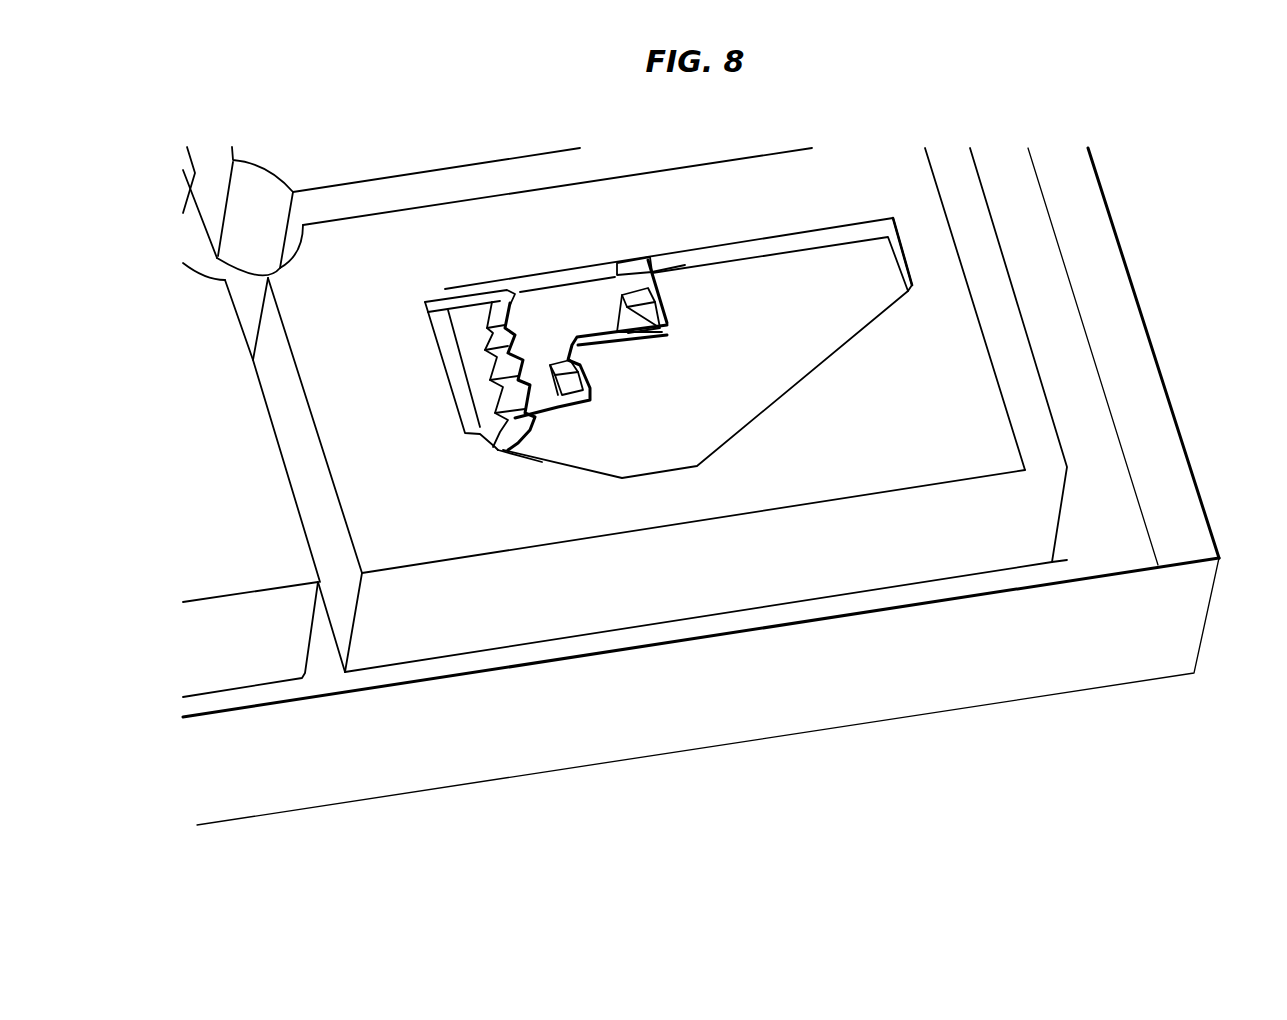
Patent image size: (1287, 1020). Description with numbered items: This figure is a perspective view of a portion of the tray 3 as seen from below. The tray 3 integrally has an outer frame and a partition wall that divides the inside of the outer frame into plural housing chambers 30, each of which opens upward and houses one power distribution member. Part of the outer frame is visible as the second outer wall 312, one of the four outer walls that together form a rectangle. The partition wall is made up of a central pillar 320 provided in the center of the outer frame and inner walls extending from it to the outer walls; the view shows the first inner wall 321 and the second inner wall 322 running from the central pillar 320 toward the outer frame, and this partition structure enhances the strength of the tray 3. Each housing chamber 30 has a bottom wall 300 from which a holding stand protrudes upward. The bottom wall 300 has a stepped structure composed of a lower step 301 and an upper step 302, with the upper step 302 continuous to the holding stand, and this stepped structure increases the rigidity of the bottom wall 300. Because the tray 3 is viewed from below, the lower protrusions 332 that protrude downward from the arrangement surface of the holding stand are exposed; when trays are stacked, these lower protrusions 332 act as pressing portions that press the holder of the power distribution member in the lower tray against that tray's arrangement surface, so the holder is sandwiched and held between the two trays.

The tray 3 is at (1117, 231).
The second outer wall 312 is at (1080, 371).
The bottom wall 300 is at (684, 292).
The lower step 301 is at (865, 208).
The upper step 302 is at (778, 293).
The housing chamber 30 is at (563, 290).
The lower protrusions 332 is at (560, 365).
The central pillar 320 is at (223, 265).
The first inner wall 321 is at (322, 665).
The second inner wall 322 is at (362, 198).